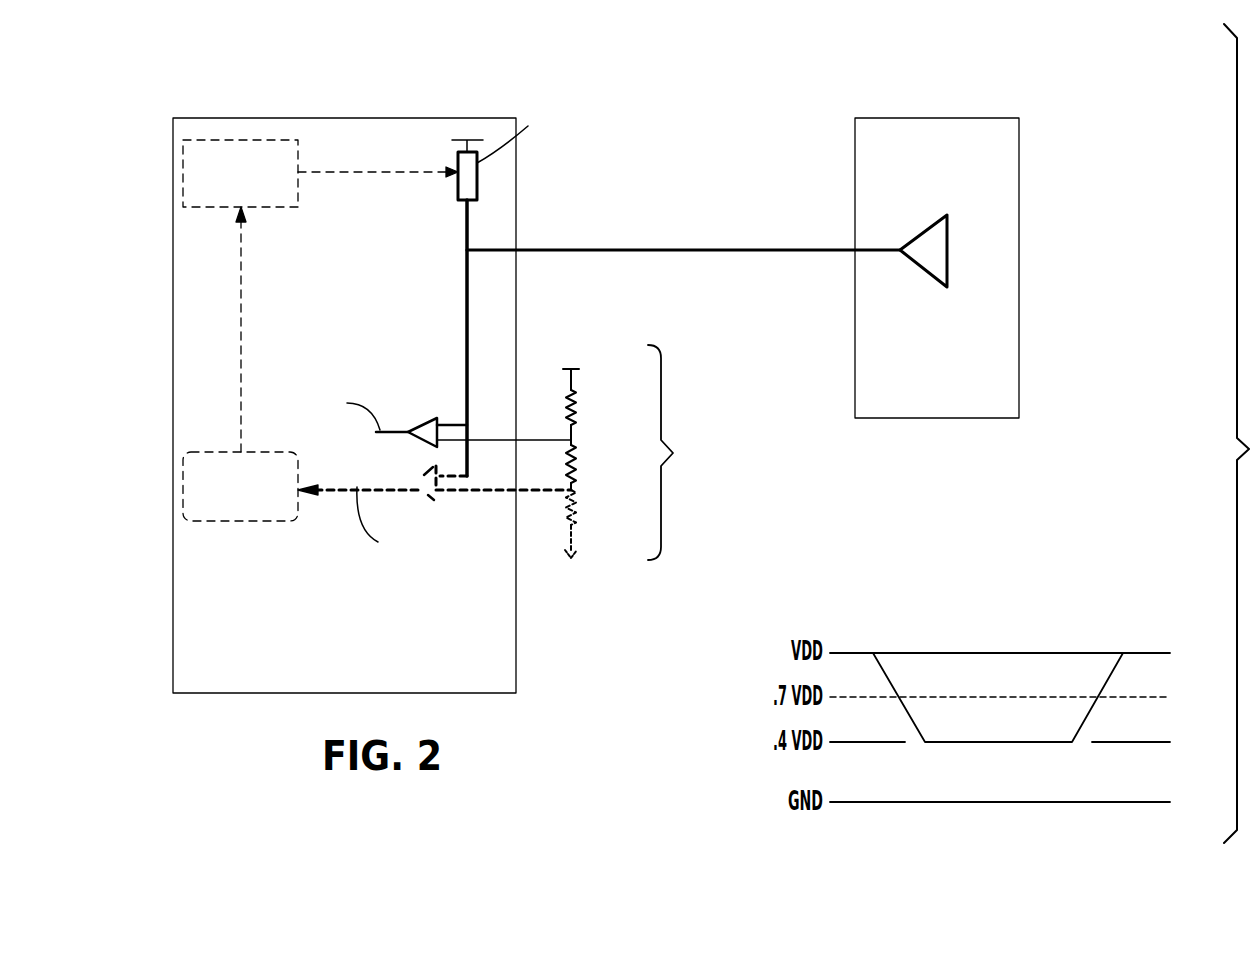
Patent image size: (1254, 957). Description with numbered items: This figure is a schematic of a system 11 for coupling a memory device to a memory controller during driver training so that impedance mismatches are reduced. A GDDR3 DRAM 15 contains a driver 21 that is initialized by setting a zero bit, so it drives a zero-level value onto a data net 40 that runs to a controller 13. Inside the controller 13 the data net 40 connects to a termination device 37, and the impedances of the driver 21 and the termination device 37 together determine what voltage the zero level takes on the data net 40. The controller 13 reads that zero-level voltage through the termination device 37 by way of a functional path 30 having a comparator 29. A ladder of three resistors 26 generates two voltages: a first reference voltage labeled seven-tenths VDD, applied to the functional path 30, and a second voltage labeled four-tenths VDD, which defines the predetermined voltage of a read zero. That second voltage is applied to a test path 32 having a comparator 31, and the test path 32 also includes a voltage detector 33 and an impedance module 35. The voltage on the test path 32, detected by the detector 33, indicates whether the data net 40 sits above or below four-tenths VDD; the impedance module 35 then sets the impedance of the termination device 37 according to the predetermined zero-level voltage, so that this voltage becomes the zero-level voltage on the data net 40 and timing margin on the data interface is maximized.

The system 11 is at (736, 88).
The controller 13 is at (451, 118).
The GDDR3 DRAM 15 is at (985, 118).
The driver 21 is at (947, 236).
The ladder of resistors 26 is at (626, 449).
The comparator 29 is at (425, 419).
The functional path 30 is at (393, 431).
The comparator 31 is at (423, 484).
The test path 32 is at (346, 488).
The voltage detector 33 is at (267, 452).
The impedance module 35 is at (298, 152).
The termination device 37 is at (477, 175).
The data net 40 is at (690, 248).